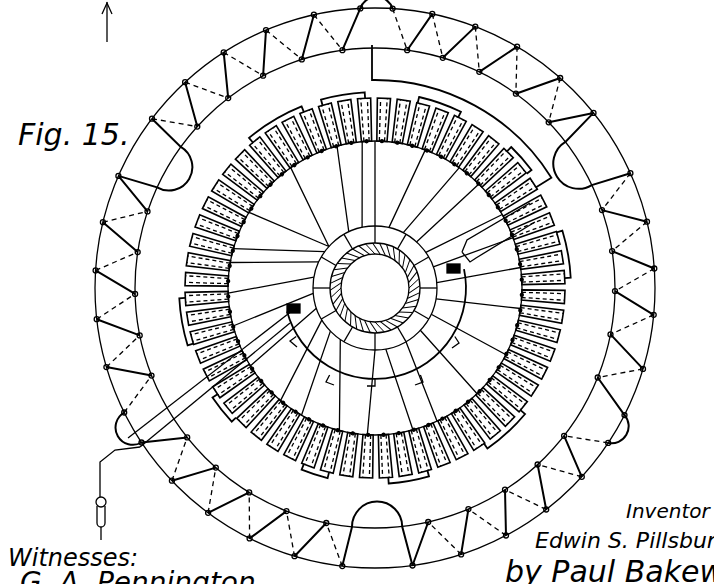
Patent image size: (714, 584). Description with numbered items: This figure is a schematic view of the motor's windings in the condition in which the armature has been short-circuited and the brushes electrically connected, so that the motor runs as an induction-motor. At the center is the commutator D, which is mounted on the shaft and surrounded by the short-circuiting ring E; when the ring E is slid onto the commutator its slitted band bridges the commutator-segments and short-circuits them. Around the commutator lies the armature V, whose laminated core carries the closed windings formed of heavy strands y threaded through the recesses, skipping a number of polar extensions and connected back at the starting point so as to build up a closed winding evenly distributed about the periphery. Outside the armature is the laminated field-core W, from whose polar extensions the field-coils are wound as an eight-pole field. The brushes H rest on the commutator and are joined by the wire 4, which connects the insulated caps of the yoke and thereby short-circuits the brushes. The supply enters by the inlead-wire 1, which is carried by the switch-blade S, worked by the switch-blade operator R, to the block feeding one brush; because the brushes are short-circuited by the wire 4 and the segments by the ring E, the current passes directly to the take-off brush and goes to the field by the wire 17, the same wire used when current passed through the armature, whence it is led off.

The inlead-wire 1 is at (107, 25).
The wire 17 is at (371, 66).
The wire 4 is at (380, 380).
The heavy strands y is at (377, 287).
The armature V is at (560, 404).
The commutator D is at (375, 288).
The short-circuiting ring E is at (375, 288).
The brushes H is at (466, 272).
The switch-blade operator R is at (120, 472).
The switch-blade S is at (107, 503).
The field-core W is at (647, 292).